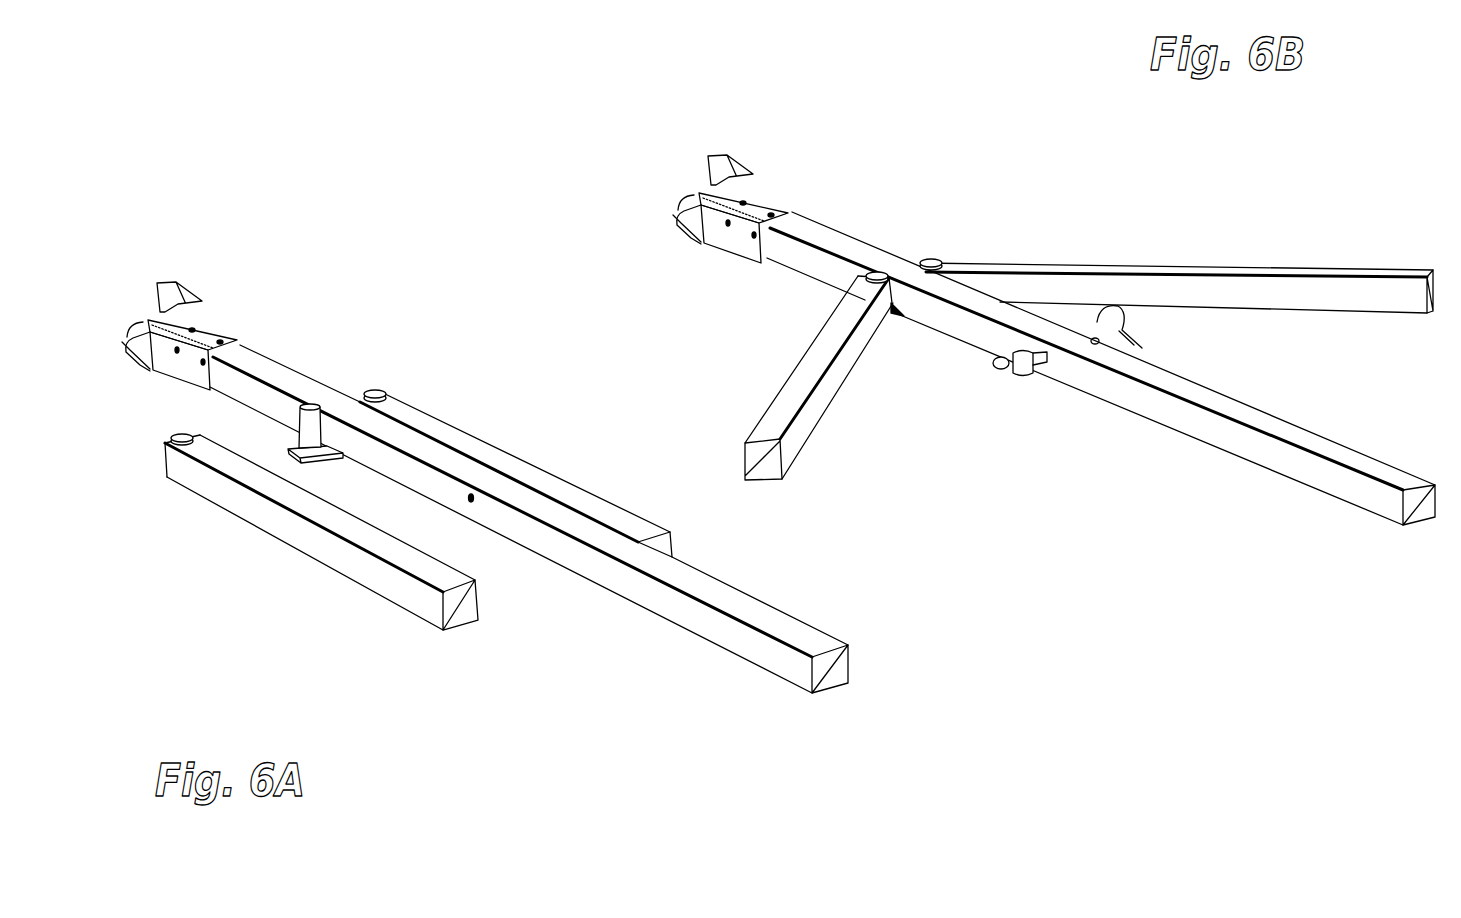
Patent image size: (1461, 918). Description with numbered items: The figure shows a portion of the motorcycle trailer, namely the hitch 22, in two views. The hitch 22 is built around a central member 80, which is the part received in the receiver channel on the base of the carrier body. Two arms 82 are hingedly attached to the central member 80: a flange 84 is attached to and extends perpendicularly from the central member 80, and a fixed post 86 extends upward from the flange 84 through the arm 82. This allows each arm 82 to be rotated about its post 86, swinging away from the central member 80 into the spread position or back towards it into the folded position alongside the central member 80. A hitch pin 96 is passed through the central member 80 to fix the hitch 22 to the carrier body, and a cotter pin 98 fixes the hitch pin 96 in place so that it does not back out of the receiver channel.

In FIG. 6A, the hitch 22 is at (612, 577).
In FIG. 6B, the hitch 22 is at (1157, 405).
In FIG. 6A, the central member 80 is at (285, 373).
In FIG. 6B, the central member 80 is at (848, 246).
In FIG. 6A, the arm 82 is at (455, 433).
In FIG. 6B, the arm 82 is at (1155, 270).
In FIG. 6A, the flange 84 is at (313, 432).
In FIG. 6A, the fixed post 86 is at (376, 391).
In FIG. 6B, the fixed post 86 is at (937, 258).
In FIG. 6B, the hitch pin 96 is at (1015, 375).
In FIG. 6B, the cotter pin 98 is at (1140, 333).